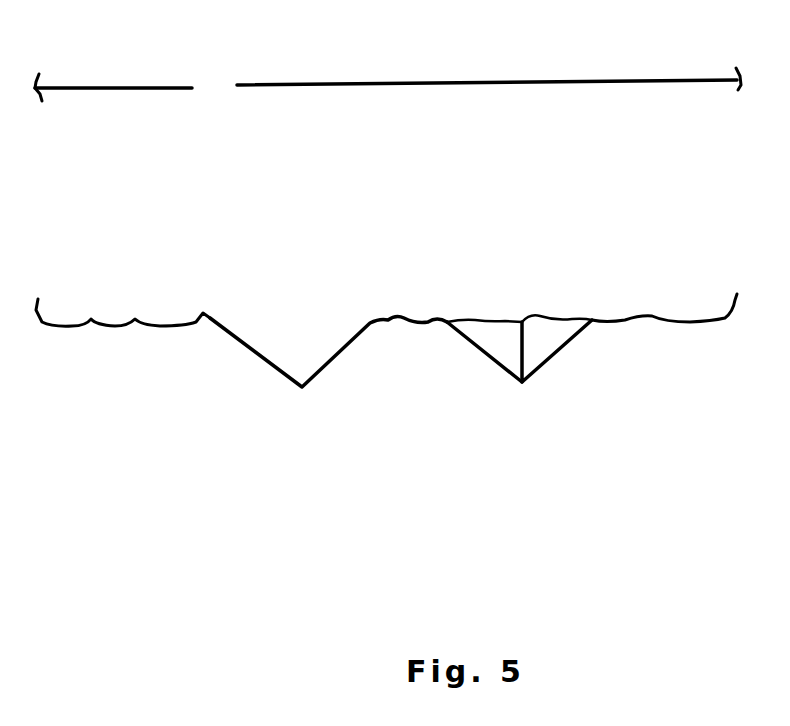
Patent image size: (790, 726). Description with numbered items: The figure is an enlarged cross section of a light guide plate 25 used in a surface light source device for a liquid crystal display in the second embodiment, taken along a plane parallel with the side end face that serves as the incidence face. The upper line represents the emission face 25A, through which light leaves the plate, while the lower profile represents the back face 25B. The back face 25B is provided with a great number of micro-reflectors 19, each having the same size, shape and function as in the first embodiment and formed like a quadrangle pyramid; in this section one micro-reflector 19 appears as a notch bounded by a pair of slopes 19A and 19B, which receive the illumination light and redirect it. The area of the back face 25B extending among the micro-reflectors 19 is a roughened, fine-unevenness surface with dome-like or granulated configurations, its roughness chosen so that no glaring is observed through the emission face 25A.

The light guide plate 25 is at (416, 98).
The emission face 25A is at (192, 88).
The back face 25B is at (152, 355).
The micro-reflector 19 is at (255, 360).
The slope 19A is at (551, 341).
The slope 19B is at (494, 341).